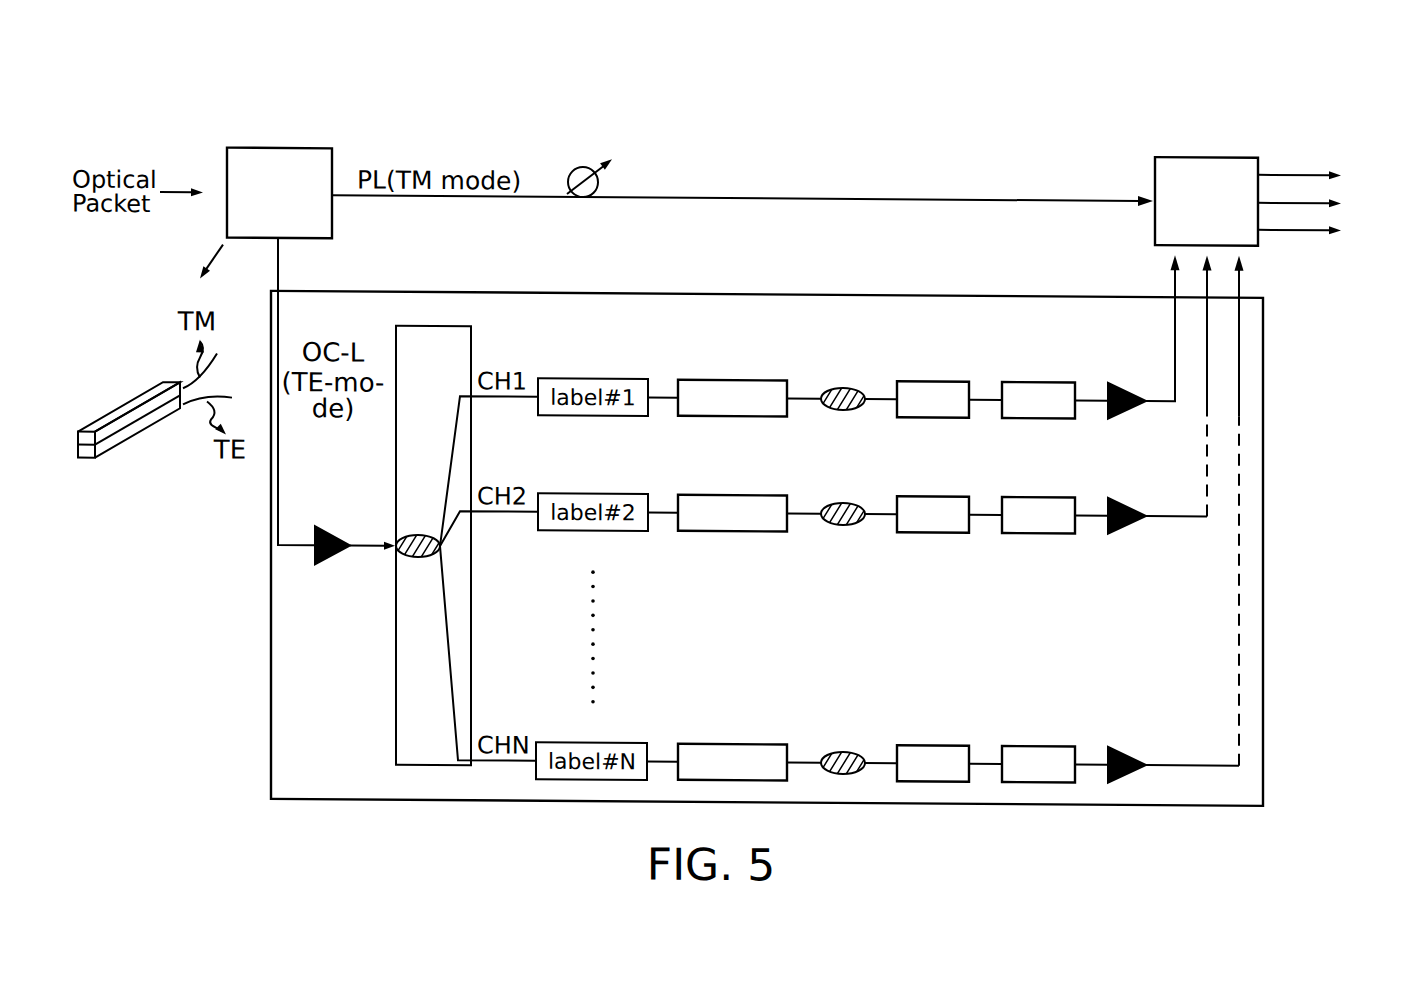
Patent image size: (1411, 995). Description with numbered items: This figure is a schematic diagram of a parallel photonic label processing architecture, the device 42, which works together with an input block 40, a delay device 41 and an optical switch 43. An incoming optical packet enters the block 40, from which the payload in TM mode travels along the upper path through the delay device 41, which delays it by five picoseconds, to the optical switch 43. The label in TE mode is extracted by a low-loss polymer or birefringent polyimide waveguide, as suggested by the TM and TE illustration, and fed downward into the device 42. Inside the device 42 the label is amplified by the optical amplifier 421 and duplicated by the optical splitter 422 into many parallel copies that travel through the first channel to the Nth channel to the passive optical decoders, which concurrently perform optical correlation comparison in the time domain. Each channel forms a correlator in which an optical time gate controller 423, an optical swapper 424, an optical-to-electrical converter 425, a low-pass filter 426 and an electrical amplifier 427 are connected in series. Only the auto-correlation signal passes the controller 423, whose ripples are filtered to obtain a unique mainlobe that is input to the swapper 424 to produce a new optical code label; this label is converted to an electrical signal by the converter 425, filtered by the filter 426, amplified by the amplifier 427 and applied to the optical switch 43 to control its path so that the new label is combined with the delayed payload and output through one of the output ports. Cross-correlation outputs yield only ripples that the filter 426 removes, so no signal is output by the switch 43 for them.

The polarization beam splitter 40 is at (316, 146).
The delay device 41 is at (583, 163).
The parallel photonic label processing device 42 is at (1200, 792).
The optical switch 43 is at (1243, 149).
The optical amplifier 421 is at (335, 523).
The optical splitter 422 is at (418, 532).
The optical time gate controller 423 is at (742, 375).
The optical swapper 424 is at (851, 379).
The optical-to-electrical converter 425 is at (916, 375).
The low-pass filter 426 is at (1021, 375).
The electrical amplifier 427 is at (1127, 377).